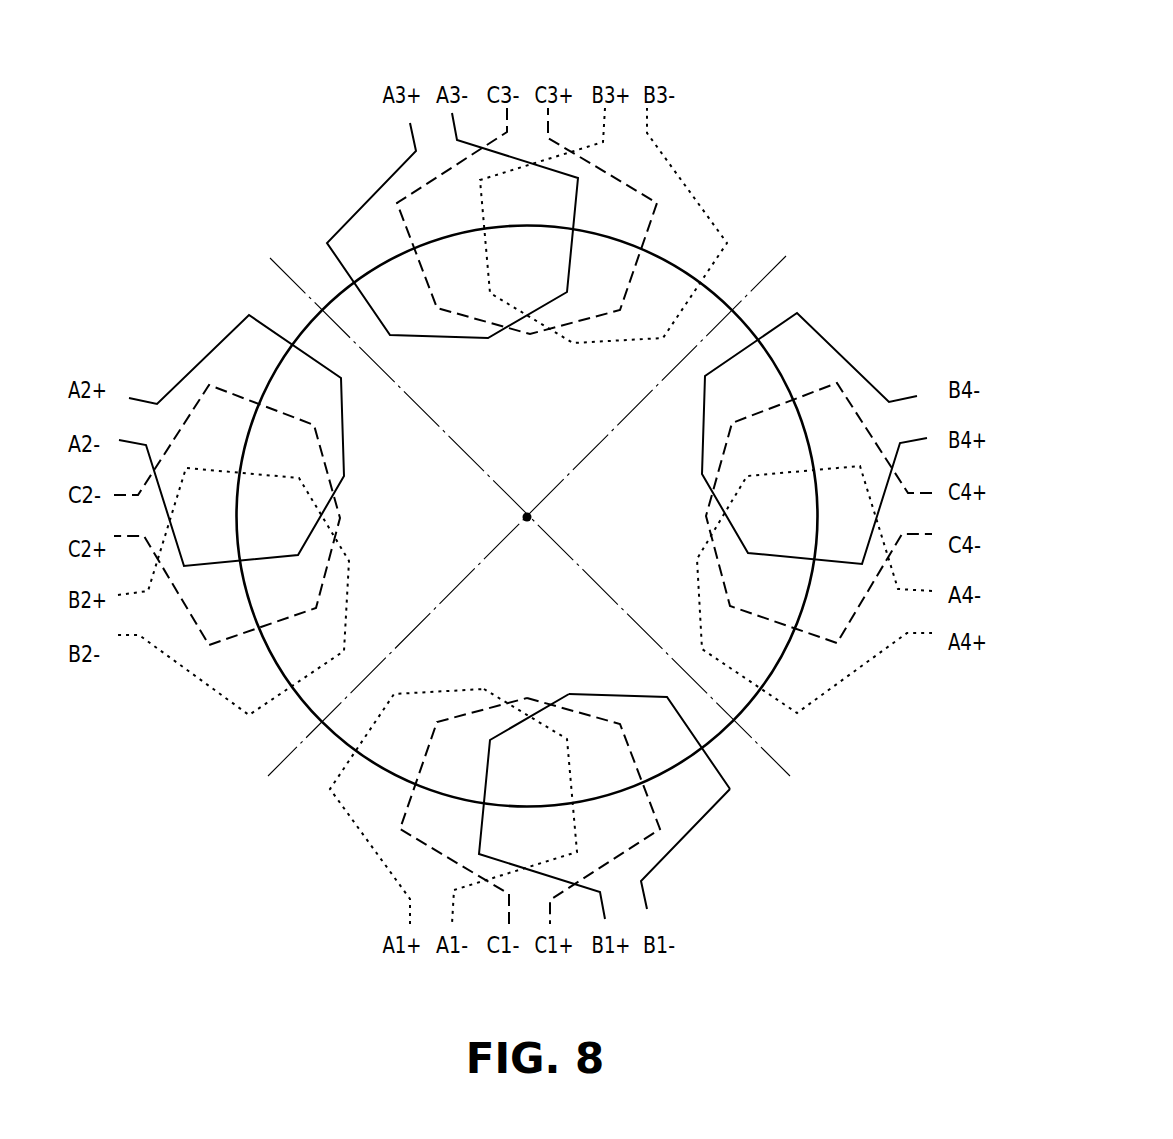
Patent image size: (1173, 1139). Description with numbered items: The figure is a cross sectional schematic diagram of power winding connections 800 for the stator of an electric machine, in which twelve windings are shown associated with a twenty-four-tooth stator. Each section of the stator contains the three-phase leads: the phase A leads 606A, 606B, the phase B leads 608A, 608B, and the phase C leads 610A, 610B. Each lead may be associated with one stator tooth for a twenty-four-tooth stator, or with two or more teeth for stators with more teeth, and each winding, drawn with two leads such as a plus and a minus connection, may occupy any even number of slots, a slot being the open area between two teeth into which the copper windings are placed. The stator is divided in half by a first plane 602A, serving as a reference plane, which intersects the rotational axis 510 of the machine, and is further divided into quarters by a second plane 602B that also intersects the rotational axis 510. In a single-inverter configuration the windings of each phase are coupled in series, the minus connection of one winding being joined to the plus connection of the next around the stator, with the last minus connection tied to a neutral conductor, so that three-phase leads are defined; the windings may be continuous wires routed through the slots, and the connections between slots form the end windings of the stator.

The power winding connections 800 is at (762, 60).
The rotational axis 510 is at (524, 510).
The first plane 602A is at (452, 592).
The second plane 602B is at (607, 590).
The phase A lead 606A is at (328, 770).
The phase A lead 606B is at (644, 876).
The phase B lead 608A is at (480, 833).
The phase B lead 608B is at (720, 772).
The phase C lead 610A is at (648, 798).
The phase C lead 610B is at (400, 808).